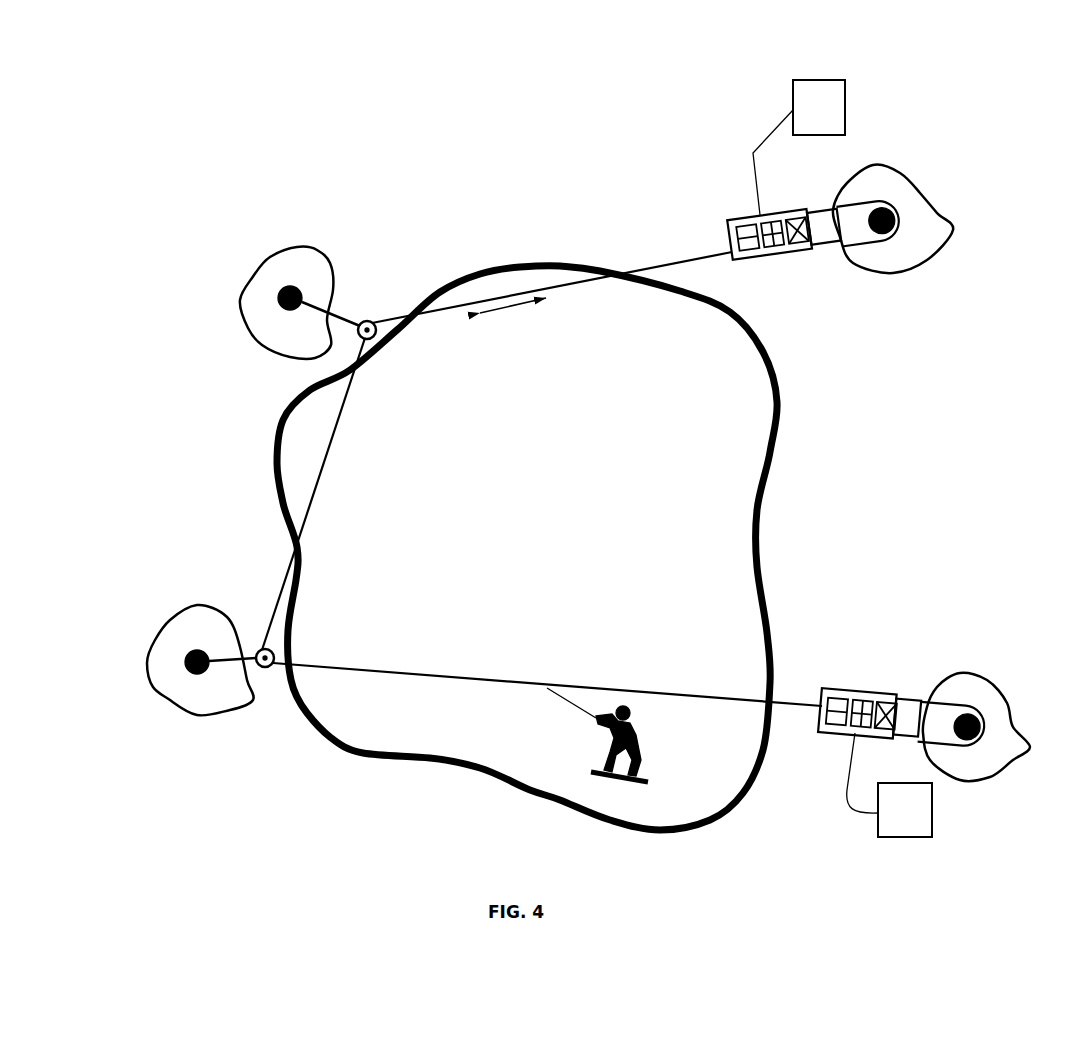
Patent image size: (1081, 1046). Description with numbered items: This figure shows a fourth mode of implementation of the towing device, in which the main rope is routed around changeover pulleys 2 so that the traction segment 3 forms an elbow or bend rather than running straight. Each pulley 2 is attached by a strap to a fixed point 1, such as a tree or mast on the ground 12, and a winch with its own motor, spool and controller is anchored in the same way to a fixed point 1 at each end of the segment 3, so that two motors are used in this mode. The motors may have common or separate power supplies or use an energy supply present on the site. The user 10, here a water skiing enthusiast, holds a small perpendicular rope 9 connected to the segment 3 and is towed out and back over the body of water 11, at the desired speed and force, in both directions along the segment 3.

The fixed point 1 is at (589, 440).
The changeover pulley 2 is at (383, 298).
The segment 3 is at (450, 303).
The perpendicular rope 9 is at (590, 723).
The user 10 is at (634, 790).
The water 11 is at (428, 741).
The ground 12 is at (410, 806).